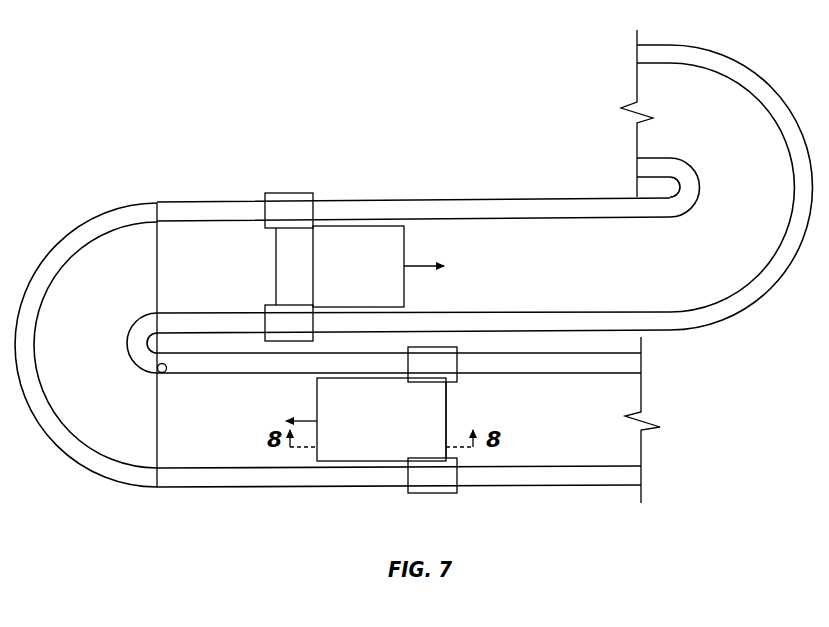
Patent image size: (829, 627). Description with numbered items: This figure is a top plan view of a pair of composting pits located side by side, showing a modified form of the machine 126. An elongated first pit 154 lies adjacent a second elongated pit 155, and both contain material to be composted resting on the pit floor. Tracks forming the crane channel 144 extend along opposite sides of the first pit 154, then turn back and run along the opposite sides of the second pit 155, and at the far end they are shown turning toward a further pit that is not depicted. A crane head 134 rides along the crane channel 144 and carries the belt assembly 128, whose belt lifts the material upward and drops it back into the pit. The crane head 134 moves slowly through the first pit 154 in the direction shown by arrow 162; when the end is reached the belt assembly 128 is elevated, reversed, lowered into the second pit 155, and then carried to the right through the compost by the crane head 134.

The crane channel 144 is at (435, 203).
The crane head 134 is at (279, 193).
The belt assembly 128 is at (359, 279).
The machine 126 is at (273, 264).
The second elongated pit 155 is at (202, 264).
The first pit 154 is at (212, 428).
The arrow 162 is at (305, 417).